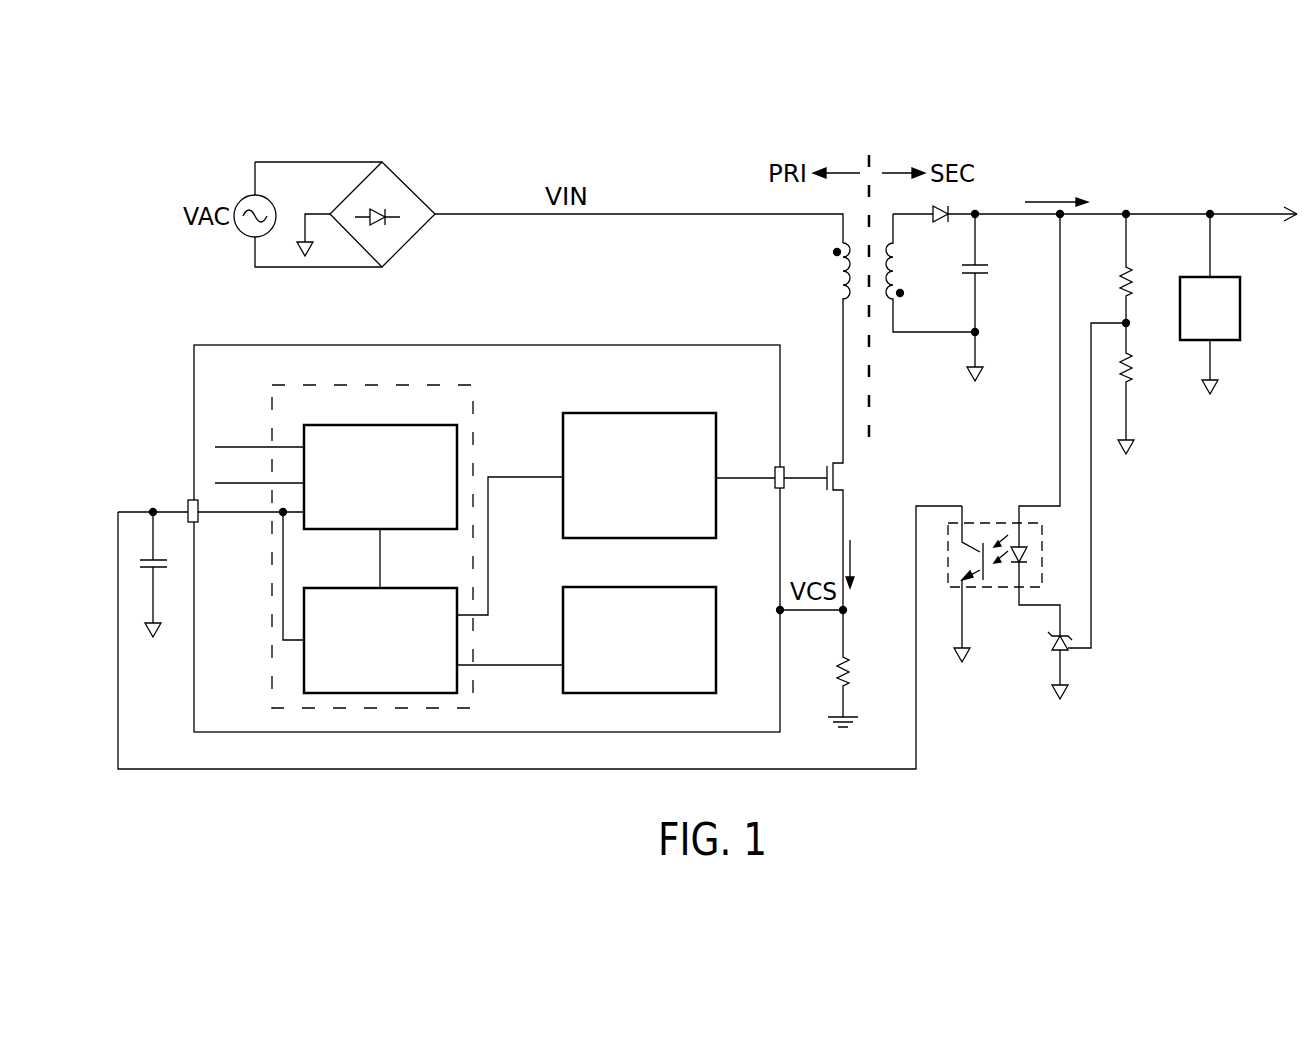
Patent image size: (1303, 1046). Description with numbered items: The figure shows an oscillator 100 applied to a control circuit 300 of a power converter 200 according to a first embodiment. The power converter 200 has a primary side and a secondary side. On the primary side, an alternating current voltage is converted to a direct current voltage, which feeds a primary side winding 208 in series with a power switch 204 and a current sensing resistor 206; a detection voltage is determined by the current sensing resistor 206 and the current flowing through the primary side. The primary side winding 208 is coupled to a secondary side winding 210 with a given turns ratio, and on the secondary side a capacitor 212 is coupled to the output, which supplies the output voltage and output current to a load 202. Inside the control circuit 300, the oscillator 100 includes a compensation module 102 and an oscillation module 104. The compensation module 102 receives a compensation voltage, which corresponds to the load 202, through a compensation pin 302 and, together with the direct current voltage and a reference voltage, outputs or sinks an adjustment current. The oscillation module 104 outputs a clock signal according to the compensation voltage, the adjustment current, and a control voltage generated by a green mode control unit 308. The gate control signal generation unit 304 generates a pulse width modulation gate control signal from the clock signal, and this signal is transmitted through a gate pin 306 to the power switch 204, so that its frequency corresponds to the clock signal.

The power converter 200 is at (1172, 133).
The load 202 is at (1241, 297).
The power switch 204 is at (849, 478).
The current sensing resistor 206 is at (855, 670).
The primary side winding 208 is at (841, 272).
The secondary side winding 210 is at (902, 268).
The capacitor 212 is at (992, 274).
The control circuit 300 is at (594, 345).
The compensation pin 302 is at (201, 522).
The gate control signal generation unit 304 is at (662, 413).
The gate pin 306 is at (786, 488).
The green mode control unit 308 is at (662, 588).
The oscillator 100 is at (475, 425).
The compensation module 102 is at (407, 425).
The oscillation module 104 is at (407, 588).